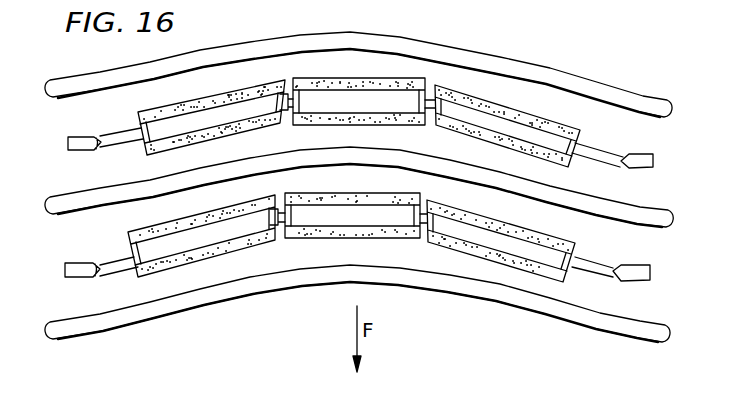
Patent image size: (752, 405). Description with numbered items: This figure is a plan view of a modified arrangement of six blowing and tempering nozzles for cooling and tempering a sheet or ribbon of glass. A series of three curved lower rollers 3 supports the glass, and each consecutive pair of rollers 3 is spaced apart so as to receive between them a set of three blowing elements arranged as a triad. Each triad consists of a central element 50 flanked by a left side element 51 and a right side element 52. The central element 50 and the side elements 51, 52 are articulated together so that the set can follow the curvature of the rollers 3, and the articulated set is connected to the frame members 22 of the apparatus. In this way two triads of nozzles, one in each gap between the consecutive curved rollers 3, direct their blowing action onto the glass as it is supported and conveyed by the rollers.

The curved lower roller 3 is at (643, 97).
The frame member 22 is at (653, 162).
The central element 50 is at (360, 80).
The left side element 51 is at (202, 104).
The right side element 52 is at (491, 107).